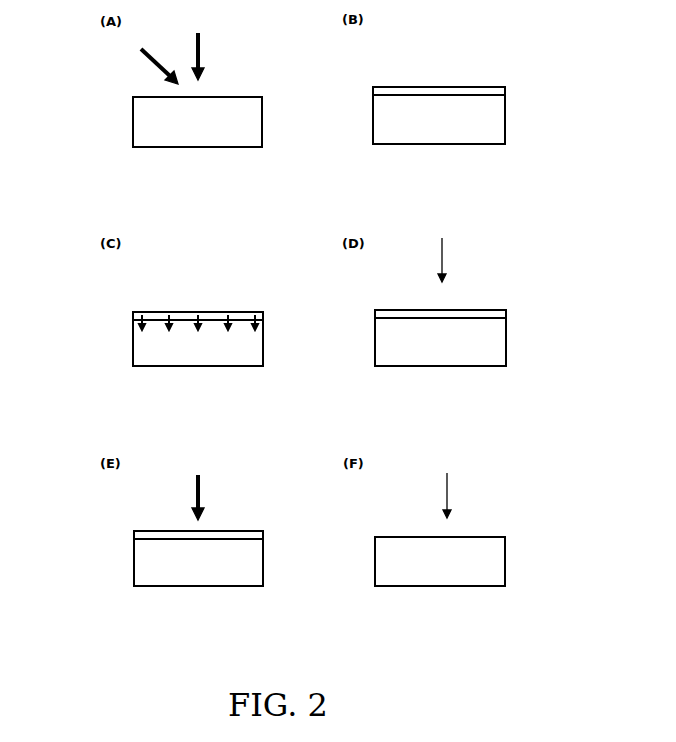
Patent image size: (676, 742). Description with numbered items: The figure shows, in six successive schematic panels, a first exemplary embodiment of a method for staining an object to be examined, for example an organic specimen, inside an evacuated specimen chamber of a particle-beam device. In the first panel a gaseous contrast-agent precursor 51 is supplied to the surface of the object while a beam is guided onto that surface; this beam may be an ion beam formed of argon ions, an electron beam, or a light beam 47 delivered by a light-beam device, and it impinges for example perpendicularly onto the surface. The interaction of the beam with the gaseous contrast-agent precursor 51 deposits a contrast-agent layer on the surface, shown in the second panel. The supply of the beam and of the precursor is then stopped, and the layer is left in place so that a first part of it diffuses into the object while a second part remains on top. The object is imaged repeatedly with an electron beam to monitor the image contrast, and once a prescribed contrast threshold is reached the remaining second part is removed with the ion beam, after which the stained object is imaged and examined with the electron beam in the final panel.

The light beam 47 is at (239, 37).
The gaseous contrast-agent precursor 51 is at (142, 58).